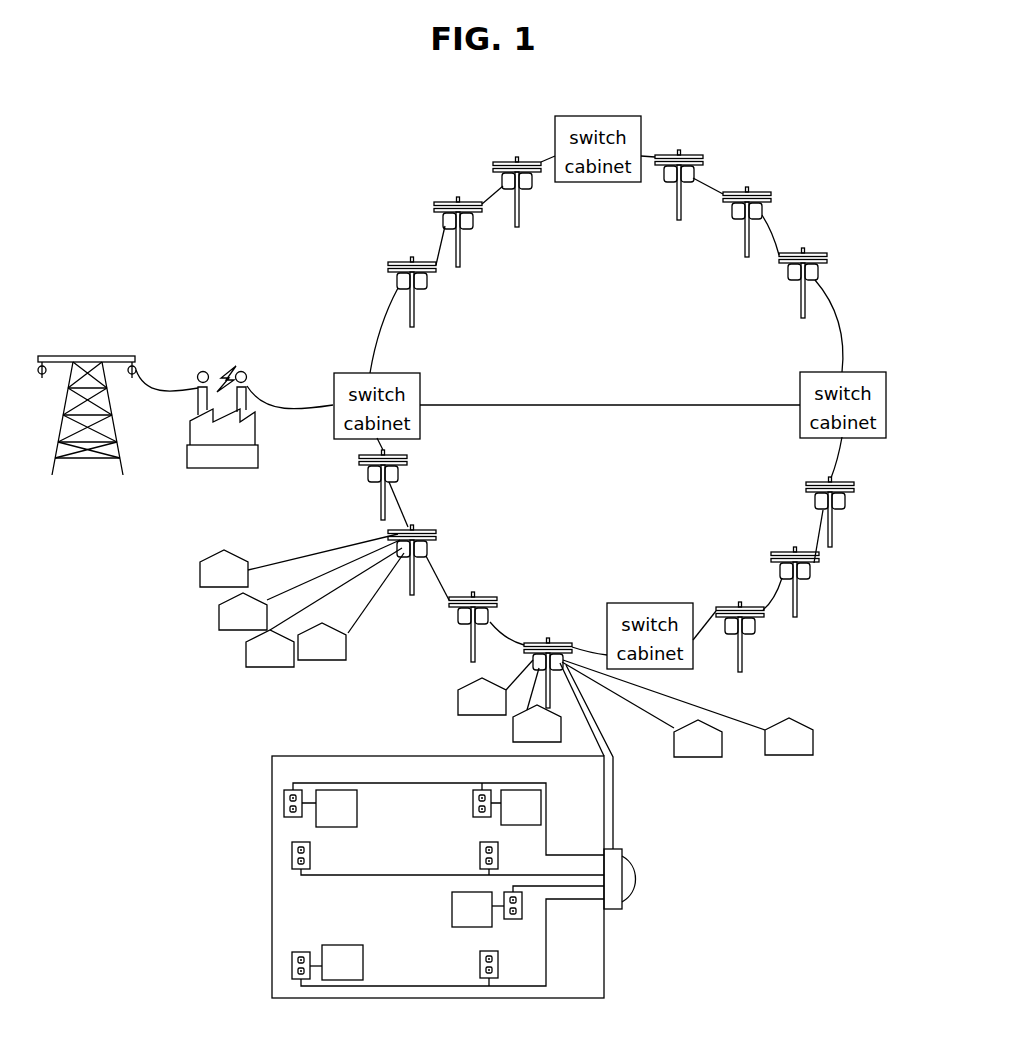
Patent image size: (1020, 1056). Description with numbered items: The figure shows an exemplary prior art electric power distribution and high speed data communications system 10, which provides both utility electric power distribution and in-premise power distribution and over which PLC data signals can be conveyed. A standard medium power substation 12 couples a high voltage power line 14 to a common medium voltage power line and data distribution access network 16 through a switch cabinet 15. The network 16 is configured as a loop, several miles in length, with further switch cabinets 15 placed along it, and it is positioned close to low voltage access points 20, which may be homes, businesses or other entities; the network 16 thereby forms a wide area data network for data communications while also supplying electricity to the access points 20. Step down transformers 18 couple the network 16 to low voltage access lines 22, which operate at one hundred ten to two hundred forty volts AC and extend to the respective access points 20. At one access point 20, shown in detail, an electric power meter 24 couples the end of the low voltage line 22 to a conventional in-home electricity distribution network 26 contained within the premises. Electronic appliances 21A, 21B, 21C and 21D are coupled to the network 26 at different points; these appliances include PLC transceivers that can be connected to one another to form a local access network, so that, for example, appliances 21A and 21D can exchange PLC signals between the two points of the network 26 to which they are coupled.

The electric power distribution and high speed data communications system 10 is at (85, 193).
The medium power substation 12 is at (222, 373).
The high voltage power line 14 is at (95, 356).
The switch cabinet 15 is at (643, 127).
The medium voltage power line and data distribution access network 16 is at (720, 207).
The step down transformer 18 is at (425, 527).
The low voltage access point 20 is at (217, 586).
The electronic appliance 21A is at (358, 805).
The electronic appliance 21B is at (542, 802).
The electronic appliance 21C is at (452, 907).
The electronic appliance 21D is at (365, 962).
The low voltage access line 22 is at (319, 552).
The electric power meter 24 is at (635, 887).
The in-home or in-building electricity distribution network 26 is at (353, 875).